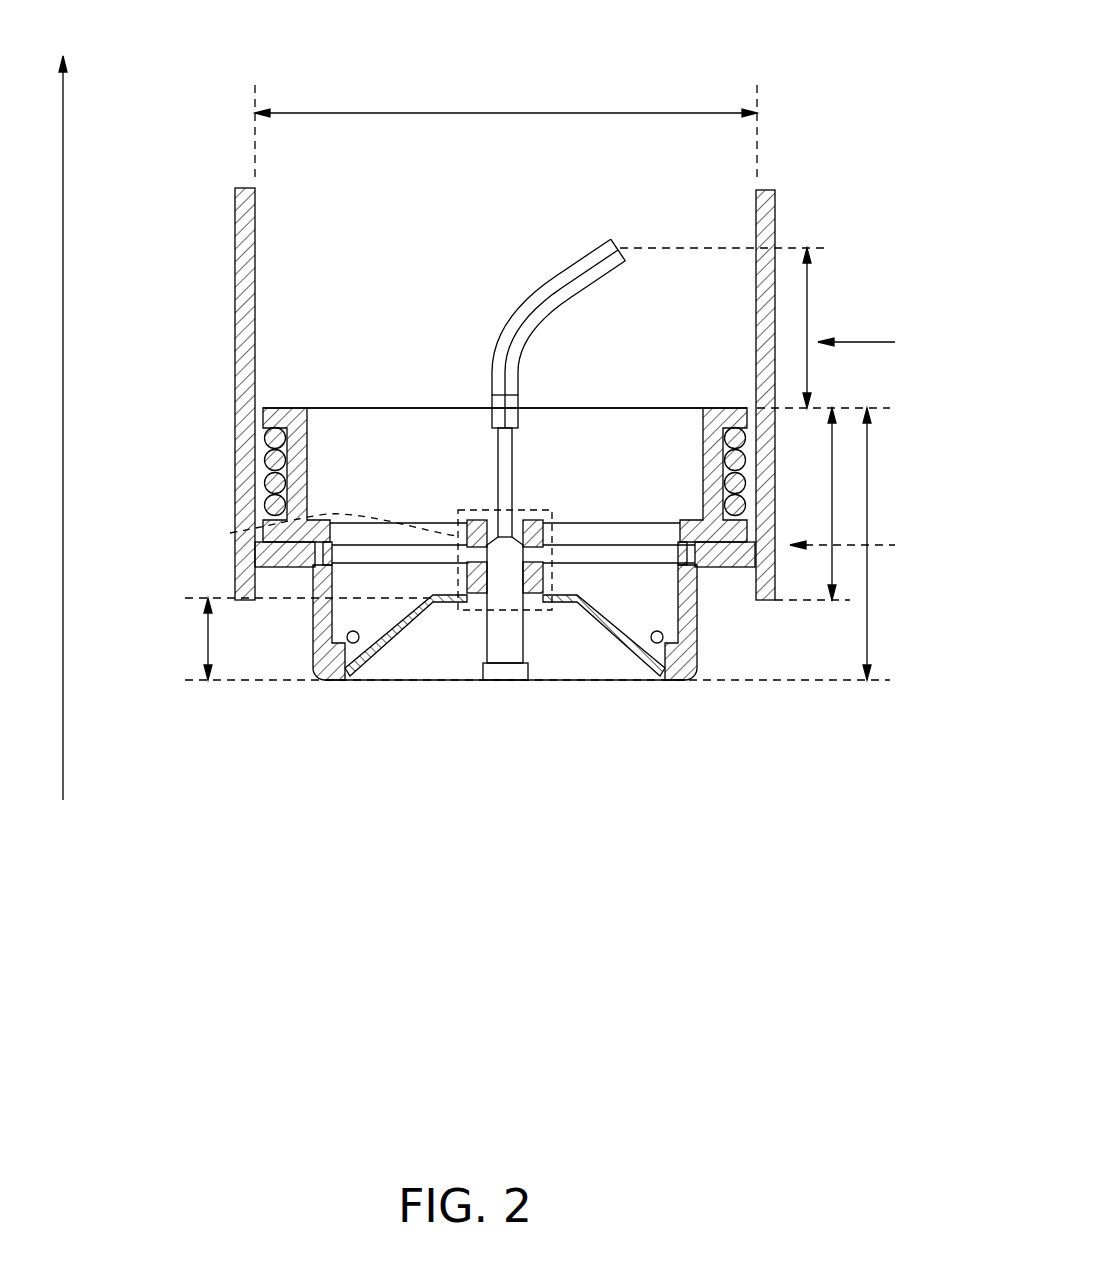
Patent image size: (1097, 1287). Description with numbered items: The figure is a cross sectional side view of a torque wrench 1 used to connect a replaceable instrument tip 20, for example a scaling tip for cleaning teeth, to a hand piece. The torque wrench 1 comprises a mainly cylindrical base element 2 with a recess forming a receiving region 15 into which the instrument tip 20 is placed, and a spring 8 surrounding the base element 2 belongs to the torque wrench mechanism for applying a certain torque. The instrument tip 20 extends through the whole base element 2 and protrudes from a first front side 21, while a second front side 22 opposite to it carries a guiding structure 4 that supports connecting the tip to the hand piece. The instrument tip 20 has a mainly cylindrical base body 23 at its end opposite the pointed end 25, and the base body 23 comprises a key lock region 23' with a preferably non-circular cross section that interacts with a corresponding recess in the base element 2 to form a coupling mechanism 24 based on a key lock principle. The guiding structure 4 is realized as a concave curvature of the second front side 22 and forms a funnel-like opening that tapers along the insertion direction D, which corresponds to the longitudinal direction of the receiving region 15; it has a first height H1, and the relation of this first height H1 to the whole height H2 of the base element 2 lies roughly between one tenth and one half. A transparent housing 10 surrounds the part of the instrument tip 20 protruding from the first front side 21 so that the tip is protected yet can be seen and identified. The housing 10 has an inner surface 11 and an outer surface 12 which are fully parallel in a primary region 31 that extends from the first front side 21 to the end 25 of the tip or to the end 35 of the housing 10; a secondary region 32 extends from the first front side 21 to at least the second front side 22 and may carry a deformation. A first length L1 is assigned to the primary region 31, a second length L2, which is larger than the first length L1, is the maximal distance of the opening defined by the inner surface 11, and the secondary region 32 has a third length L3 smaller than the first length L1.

The torque wrench 1 is at (286, 797).
The base element 2 is at (548, 430).
The guiding structure 4 is at (400, 636).
The spring 8 is at (268, 458).
The transparent housing 10 is at (775, 215).
The inner surface 11 is at (255, 235).
The outer surface 12 is at (226, 262).
The receiving region 15 is at (492, 425).
The replaceable instrument tip 20 is at (538, 316).
The first front side 21 is at (357, 400).
The second front side 22 is at (655, 681).
The base body 23 is at (524, 634).
The key lock region 23' is at (603, 469).
The coupling mechanism 24 is at (232, 533).
The pointed end 25 is at (620, 246).
The primary region 31 is at (874, 342).
The secondary region 32 is at (861, 546).
The end of the housing 35 is at (765, 190).
The insertion direction D is at (63, 138).
The first length L1 is at (807, 330).
The second length L2 is at (655, 113).
The third length L3 is at (832, 500).
The first height H1 is at (208, 640).
The whole height H2 is at (867, 620).